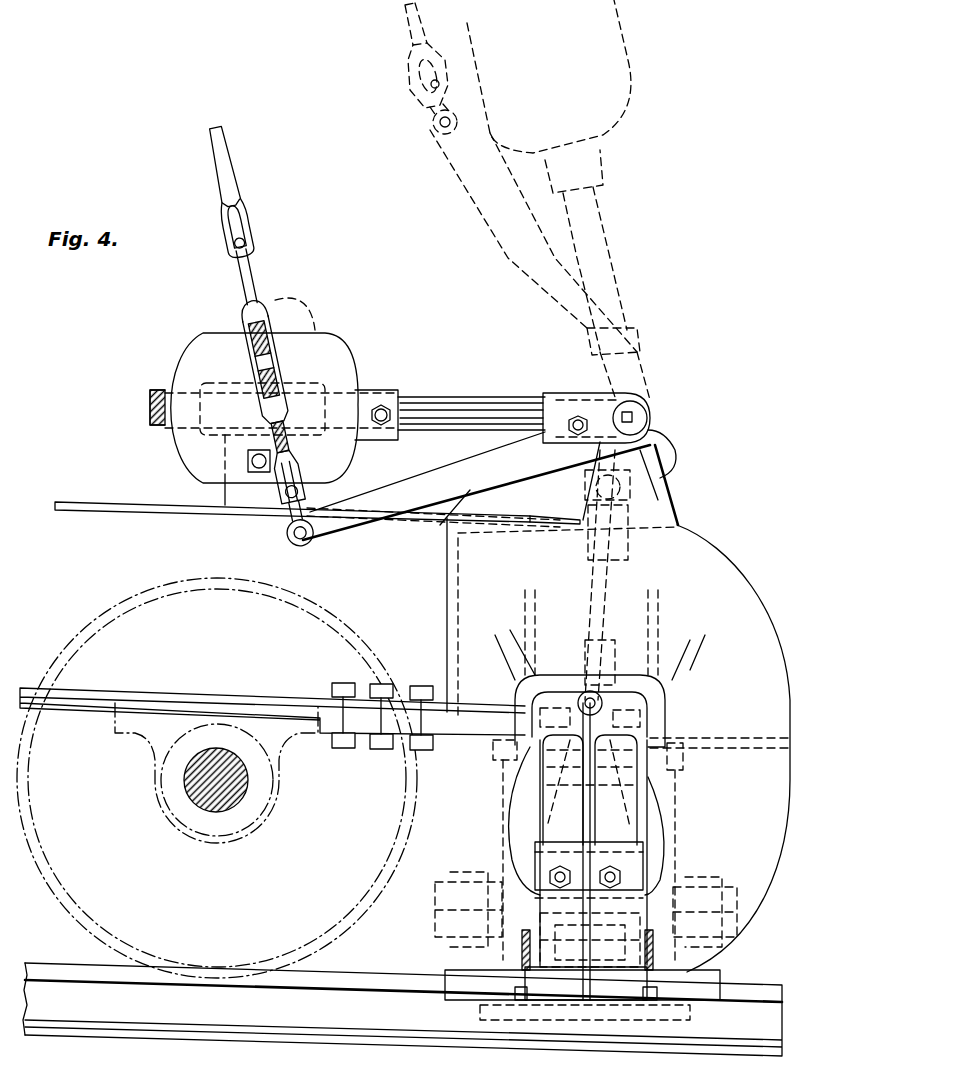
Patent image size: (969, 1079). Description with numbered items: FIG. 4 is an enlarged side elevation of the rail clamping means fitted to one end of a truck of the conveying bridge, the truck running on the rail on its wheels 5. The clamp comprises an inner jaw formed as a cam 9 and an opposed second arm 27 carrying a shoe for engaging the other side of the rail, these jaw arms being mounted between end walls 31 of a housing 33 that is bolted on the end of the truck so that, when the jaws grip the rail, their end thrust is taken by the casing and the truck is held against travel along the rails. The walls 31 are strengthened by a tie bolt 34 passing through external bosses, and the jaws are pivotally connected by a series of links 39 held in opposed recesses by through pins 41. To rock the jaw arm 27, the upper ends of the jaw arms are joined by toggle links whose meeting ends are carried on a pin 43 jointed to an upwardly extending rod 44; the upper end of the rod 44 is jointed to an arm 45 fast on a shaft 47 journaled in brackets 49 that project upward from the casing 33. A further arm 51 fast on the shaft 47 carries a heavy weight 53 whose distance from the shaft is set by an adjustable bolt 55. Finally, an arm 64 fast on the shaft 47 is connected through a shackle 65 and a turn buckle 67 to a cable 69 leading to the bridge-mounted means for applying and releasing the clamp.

The wheels 5 is at (292, 600).
The cam 9 is at (718, 995).
The second arm 27 is at (650, 842).
The end walls 31 is at (502, 803).
The housing 33 is at (452, 590).
The tie bolt 34 is at (480, 885).
The links 39 is at (520, 952).
The through pins 41 is at (648, 946).
The pin 43 is at (672, 722).
The rod 44 is at (596, 595).
The arm 45 is at (660, 492).
The shaft 47 is at (620, 425).
The brackets 49 is at (672, 478).
The arm 51 is at (455, 408).
The heavy weight 53 is at (350, 362).
The adjustable bolt 55 is at (388, 402).
The arm 64 is at (408, 485).
The shackle 65 is at (290, 515).
The turn buckle 67 is at (272, 375).
The cable 69 is at (228, 168).